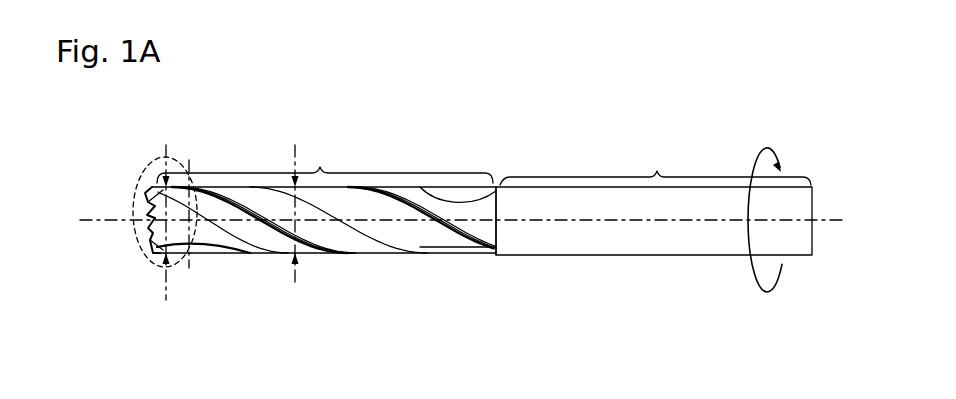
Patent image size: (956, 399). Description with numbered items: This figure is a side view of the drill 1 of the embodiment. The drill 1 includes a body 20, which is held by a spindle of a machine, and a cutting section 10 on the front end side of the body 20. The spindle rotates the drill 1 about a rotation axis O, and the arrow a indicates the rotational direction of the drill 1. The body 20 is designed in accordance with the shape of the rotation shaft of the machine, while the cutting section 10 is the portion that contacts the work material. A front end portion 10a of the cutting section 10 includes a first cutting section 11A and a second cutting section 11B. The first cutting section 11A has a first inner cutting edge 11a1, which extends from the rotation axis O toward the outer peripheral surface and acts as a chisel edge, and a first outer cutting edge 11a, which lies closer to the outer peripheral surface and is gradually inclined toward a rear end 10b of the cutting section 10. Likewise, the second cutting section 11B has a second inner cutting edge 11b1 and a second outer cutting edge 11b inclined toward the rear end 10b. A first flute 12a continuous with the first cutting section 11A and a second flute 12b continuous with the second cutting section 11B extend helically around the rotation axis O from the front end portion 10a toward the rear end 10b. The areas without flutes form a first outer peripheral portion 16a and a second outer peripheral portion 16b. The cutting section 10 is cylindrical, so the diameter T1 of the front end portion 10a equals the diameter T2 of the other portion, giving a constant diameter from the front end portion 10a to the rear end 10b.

The drill 1 is at (443, 211).
The cutting section 10 is at (303, 229).
The front end portion 10a is at (150, 223).
The rear end 10b is at (497, 184).
The first cutting section 11A is at (150, 262).
The first outer cutting edge 11a is at (133, 349).
The first inner cutting edge 11a1 is at (150, 232).
The second cutting section 11B is at (148, 185).
The second outer cutting edge 11b is at (132, 121).
The second inner cutting edge 11b1 is at (152, 207).
The first flute 12a is at (188, 240).
The second flute 12b is at (377, 240).
The first outer peripheral portion 16a is at (257, 230).
The second outer peripheral portion 16b is at (440, 230).
The body 20 is at (654, 199).
The diameter of the front end portion T1 is at (167, 300).
The diameter of a portion other than the front end portion T2 is at (296, 285).
The arrow indicating rotational direction a is at (765, 200).
The rotation axis O is at (461, 208).